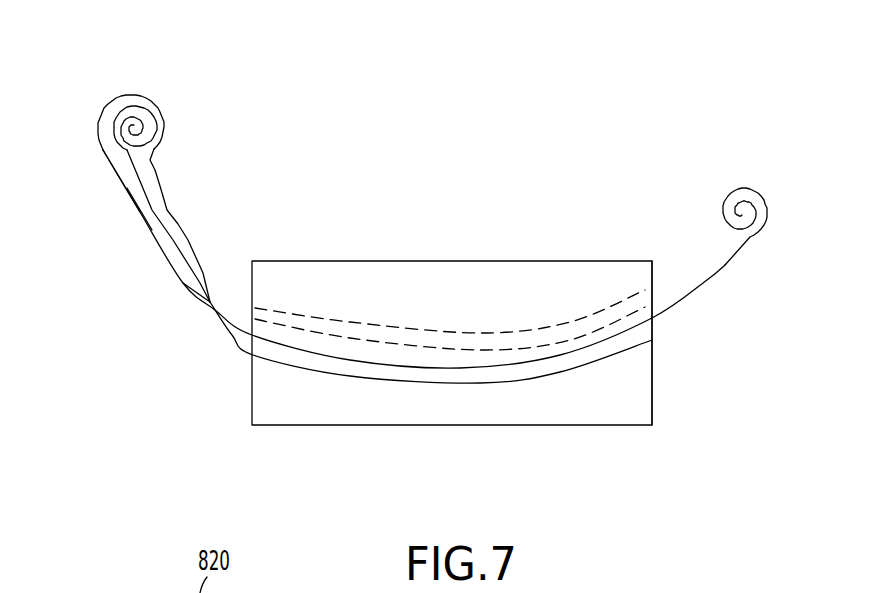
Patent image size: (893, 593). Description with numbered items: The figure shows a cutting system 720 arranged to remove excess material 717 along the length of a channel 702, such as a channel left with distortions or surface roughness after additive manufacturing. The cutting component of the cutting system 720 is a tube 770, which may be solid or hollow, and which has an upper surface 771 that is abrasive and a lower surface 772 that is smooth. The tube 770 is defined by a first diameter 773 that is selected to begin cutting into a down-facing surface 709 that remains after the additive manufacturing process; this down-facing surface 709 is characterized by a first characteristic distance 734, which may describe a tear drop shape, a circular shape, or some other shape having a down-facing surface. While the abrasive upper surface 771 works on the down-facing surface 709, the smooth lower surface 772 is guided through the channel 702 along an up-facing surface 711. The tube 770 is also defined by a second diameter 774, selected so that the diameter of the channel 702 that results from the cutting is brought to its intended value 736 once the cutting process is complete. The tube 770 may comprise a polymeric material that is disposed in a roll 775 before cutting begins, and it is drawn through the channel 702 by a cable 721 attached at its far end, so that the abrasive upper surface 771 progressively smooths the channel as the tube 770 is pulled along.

The cutting system 720 is at (413, 239).
The roll 775 is at (151, 78).
The tube 770 is at (164, 242).
The upper surface 771 is at (155, 170).
The second diameter 774 is at (97, 170).
The lower surface 772 is at (127, 188).
The first diameter 773 is at (171, 289).
The channel 702 is at (423, 313).
The down-facing surface 709 is at (370, 347).
The excess material 717 is at (493, 337).
The up-facing surface 711 is at (525, 377).
The first characteristic distance 734 is at (257, 372).
The intended value 736 is at (648, 352).
The cable 721 is at (725, 265).